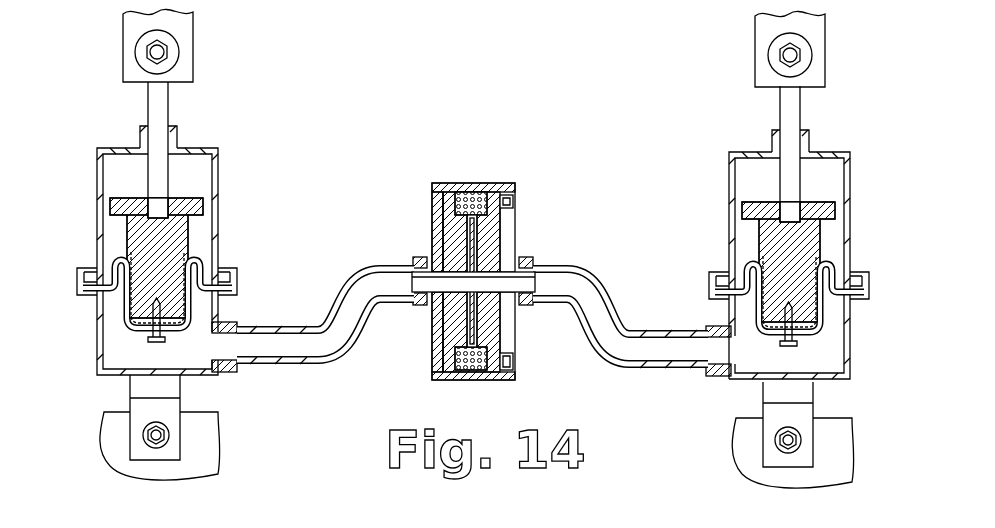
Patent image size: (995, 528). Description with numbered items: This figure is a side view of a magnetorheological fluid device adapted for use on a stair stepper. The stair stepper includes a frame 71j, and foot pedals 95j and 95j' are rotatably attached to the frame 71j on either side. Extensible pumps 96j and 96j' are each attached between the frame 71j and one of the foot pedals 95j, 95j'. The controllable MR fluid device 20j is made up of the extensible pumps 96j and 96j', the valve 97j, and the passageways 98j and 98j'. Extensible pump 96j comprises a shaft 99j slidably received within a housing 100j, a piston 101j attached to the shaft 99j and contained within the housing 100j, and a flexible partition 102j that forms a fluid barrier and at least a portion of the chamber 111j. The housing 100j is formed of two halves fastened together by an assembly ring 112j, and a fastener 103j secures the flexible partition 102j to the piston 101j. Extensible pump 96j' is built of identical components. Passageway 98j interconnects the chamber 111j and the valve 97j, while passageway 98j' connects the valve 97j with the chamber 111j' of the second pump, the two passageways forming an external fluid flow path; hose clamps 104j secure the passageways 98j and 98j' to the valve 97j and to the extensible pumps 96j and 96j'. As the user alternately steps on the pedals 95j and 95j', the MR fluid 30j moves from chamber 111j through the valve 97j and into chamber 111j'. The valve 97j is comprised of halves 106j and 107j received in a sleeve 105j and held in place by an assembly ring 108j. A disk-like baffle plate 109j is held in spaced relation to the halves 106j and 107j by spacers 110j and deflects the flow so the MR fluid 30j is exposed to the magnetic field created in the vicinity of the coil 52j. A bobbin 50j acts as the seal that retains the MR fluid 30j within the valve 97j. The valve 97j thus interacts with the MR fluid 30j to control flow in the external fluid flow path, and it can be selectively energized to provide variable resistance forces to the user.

The extensible pump 96j is at (471, 248).
The foot pedal 95j is at (187, 45).
The shaft 99j is at (170, 102).
The housing 100j is at (218, 158).
The piston 101j is at (190, 228).
The flexible partition 102j is at (112, 250).
The assembly ring 112j is at (237, 275).
The hose clamp 104j is at (237, 325).
The MR fluid 30j is at (118, 322).
The fastener 103j is at (150, 336).
The chamber 111j is at (182, 374).
The frame 71j is at (200, 435).
The passageway 98j is at (325, 341).
The controllable MR fluid device 20j is at (396, 132).
The valve 97j is at (548, 132).
The bobbin 50j is at (456, 190).
The coil 52j is at (462, 190).
The sleeve 105j is at (490, 190).
The valve half 106j is at (440, 212).
The assembly ring 108j is at (516, 200).
The valve half 107j is at (516, 224).
The baffle plate 109j is at (480, 232).
The spacer 110j is at (462, 316).
The passageway 98j' is at (620, 325).
The extensible pump 96j' is at (791, 215).
The foot pedal 95j' is at (830, 49).
The chamber 111j' is at (820, 377).